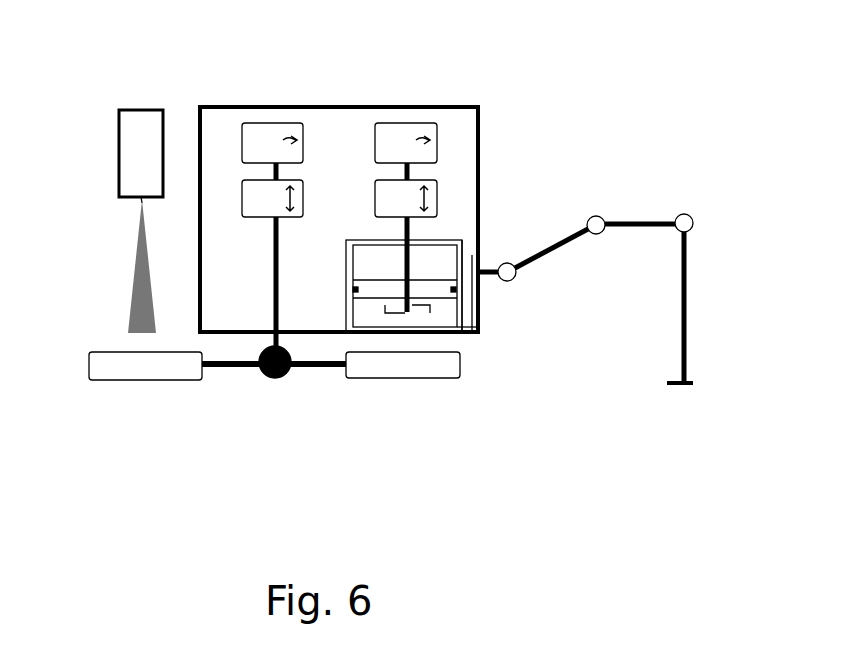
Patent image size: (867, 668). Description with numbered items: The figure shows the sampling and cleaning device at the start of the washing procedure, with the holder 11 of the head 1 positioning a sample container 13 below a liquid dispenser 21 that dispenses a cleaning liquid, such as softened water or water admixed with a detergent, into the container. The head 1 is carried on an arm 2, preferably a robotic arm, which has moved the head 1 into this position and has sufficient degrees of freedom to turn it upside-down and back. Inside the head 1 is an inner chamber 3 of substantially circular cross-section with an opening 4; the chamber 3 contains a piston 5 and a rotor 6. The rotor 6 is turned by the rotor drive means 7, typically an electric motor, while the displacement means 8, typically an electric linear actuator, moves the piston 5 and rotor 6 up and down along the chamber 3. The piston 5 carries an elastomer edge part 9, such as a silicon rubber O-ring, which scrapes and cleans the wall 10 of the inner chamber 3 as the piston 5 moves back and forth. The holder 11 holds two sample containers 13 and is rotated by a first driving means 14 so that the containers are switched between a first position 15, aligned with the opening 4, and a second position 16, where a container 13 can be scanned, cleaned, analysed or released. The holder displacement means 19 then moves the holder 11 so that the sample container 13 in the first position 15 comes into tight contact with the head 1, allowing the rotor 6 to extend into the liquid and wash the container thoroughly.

The head 1 is at (465, 130).
The arm 2 is at (648, 207).
The inner chamber 3 is at (437, 253).
The opening 4 is at (445, 335).
The piston 5 is at (437, 283).
The rotor 6 is at (435, 308).
The rotor drive means 7 is at (408, 132).
The displacement means 8 is at (375, 197).
The edge part 9 is at (463, 246).
The wall 10 is at (478, 332).
The holder 11 is at (305, 387).
The sample container 13 is at (97, 368).
The first driving means 14 is at (276, 132).
The first position 15 is at (410, 420).
The second position 16 is at (146, 410).
The holder displacement means 19 is at (243, 192).
The liquid dispenser 21 is at (122, 112).